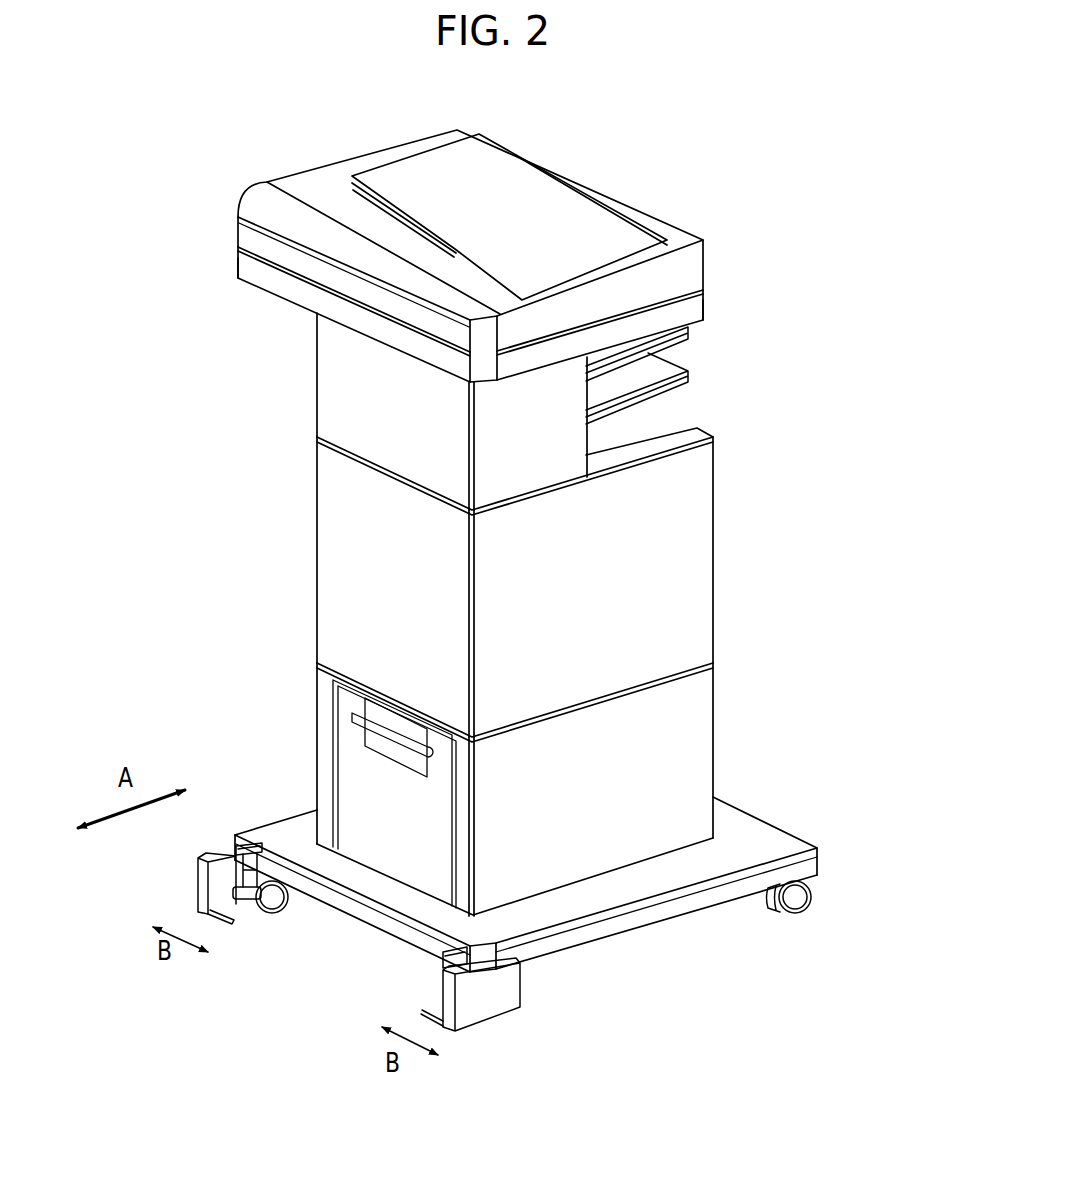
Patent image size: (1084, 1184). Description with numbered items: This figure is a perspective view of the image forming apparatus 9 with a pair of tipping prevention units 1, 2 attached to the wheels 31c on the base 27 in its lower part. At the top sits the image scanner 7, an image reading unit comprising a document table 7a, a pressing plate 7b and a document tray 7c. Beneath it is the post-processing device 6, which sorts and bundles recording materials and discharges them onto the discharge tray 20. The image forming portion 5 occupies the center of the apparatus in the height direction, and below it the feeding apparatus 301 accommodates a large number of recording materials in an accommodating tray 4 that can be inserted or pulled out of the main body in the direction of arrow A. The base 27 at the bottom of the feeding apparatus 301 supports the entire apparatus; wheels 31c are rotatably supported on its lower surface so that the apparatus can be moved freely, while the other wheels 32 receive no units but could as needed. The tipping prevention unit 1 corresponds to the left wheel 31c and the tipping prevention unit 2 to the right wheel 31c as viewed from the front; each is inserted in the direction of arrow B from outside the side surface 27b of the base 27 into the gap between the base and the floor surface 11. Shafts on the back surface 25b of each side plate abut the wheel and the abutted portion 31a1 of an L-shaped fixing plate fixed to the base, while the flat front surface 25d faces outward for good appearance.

The image forming apparatus 9 is at (726, 187).
The image scanner 7 is at (256, 289).
The document table 7a is at (689, 310).
The pressing plate 7b is at (688, 263).
The document tray 7c is at (540, 190).
The discharge tray 20 is at (683, 388).
The post-processing device 6 is at (340, 398).
The image forming portion 5 is at (340, 507).
The accommodating tray 4 is at (352, 710).
The feeding apparatus 301 is at (692, 714).
The floor surface 11 is at (717, 979).
The base 27 is at (765, 822).
The side surface of the base 27b is at (622, 918).
The other wheels 32 is at (812, 896).
The wheel 31c is at (273, 905).
The abutted portion 31a1 is at (250, 840).
The tipping prevention unit 1 is at (197, 853).
The back surface of the side plate 25b is at (218, 878).
The tipping prevention unit 2 is at (477, 1027).
The front surface of the side plate 25d is at (503, 1000).